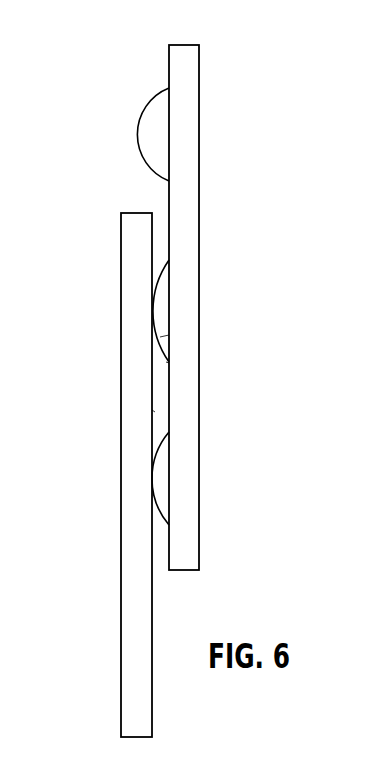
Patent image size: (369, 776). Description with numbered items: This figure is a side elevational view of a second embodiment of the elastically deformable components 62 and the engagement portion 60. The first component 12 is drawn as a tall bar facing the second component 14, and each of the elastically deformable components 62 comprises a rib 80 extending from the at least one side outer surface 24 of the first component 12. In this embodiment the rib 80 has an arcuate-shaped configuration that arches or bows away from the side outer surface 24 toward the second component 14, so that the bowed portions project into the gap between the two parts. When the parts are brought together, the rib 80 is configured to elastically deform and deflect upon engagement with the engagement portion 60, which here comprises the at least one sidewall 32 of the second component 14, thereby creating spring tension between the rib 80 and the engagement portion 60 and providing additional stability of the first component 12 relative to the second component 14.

The first component 12 is at (227, 43).
The second component 14 is at (92, 212).
The side outer surface 24 is at (168, 363).
The sidewall 32 is at (153, 412).
The engagement portion 60 is at (162, 277).
The elastically deformable component 62 is at (150, 474).
The rib 80 is at (160, 337).